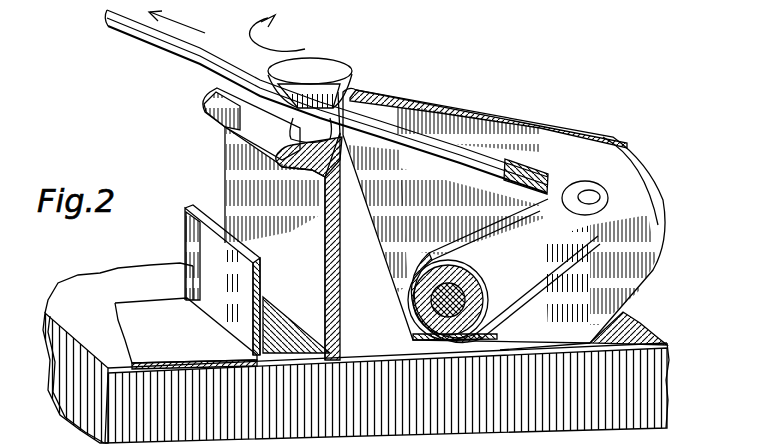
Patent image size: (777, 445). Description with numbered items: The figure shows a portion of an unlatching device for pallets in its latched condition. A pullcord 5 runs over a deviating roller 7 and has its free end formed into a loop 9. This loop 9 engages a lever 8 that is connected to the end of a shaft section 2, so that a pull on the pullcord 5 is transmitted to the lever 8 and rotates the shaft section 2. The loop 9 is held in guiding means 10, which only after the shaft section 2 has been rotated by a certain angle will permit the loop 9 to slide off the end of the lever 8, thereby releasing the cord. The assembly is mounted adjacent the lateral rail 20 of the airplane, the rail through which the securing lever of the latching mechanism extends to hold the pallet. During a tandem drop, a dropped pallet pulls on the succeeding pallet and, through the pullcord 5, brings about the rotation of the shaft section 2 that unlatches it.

The shaft section 2 is at (452, 292).
The pullcord 5 is at (138, 32).
The deviating roller 7 is at (320, 72).
The lever 8 is at (537, 168).
The loop 9 is at (590, 182).
The guiding means 10 is at (372, 115).
The lateral rail 20 is at (213, 110).